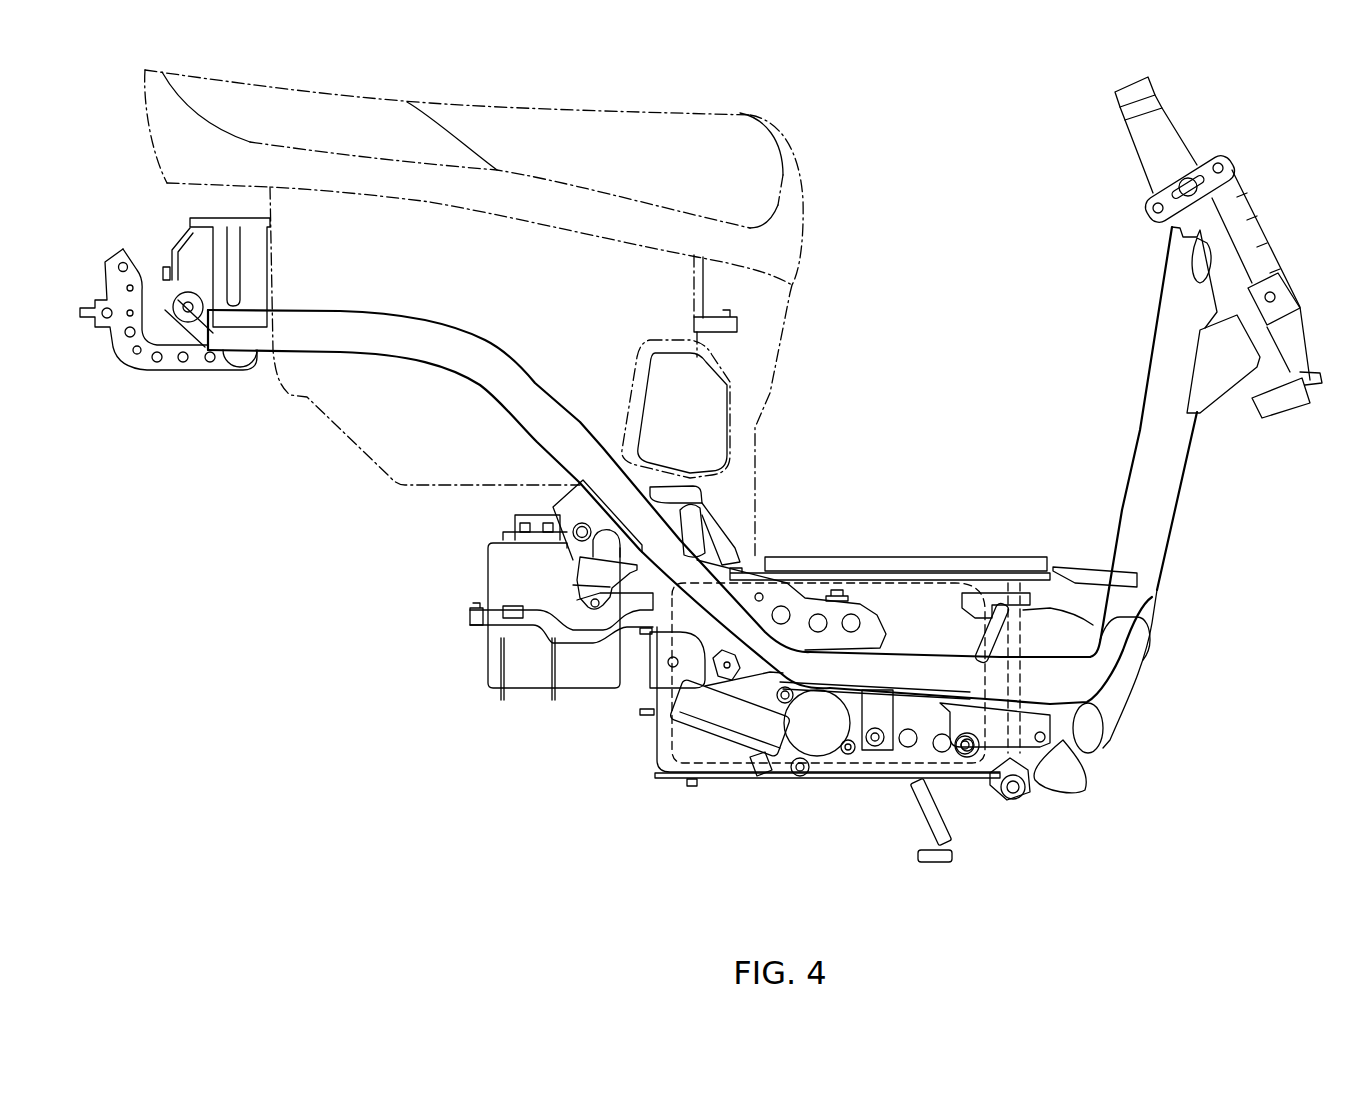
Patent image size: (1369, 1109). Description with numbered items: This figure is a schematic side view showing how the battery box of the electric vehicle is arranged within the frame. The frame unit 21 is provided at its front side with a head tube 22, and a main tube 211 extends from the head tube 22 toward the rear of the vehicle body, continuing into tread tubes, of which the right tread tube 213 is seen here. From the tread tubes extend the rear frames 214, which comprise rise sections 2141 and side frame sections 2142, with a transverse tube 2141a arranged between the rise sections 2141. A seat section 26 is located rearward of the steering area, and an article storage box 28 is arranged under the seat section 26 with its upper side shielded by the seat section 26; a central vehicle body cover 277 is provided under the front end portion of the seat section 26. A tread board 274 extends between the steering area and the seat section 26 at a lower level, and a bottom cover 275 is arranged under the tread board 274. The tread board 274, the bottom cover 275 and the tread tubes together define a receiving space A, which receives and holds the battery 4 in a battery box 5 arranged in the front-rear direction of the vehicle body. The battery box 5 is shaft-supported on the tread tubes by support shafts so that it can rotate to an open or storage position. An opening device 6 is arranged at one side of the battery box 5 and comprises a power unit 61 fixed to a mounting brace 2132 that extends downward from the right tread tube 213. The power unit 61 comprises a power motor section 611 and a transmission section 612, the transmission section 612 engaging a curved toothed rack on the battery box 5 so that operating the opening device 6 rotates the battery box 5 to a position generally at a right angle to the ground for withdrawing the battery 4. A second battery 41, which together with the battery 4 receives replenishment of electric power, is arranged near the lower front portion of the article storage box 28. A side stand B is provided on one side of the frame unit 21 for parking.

The frame unit 21 is at (1183, 550).
The main tube 211 is at (1173, 465).
The right tread tube 213 is at (927, 668).
The mounting brace 2132 is at (925, 753).
The rear frames 214 is at (453, 393).
The rise sections 2141 is at (545, 423).
The transverse tube 2141a is at (693, 518).
The side frame sections 2142 is at (397, 347).
The head tube 22 is at (1152, 152).
The seat section 26 is at (787, 150).
The tread board 274 is at (990, 565).
The bottom cover 275 is at (660, 780).
The central vehicle body cover 277 is at (770, 360).
The article storage box 28 is at (332, 408).
The battery 4 is at (870, 590).
The second battery 41 is at (487, 663).
The battery box 5 is at (667, 743).
The opening device 6 is at (853, 788).
The power unit 61 is at (723, 848).
The power motor section 611 is at (730, 727).
The transmission section 612 is at (808, 740).
The receiving space A is at (1053, 638).
The side stand B is at (933, 862).